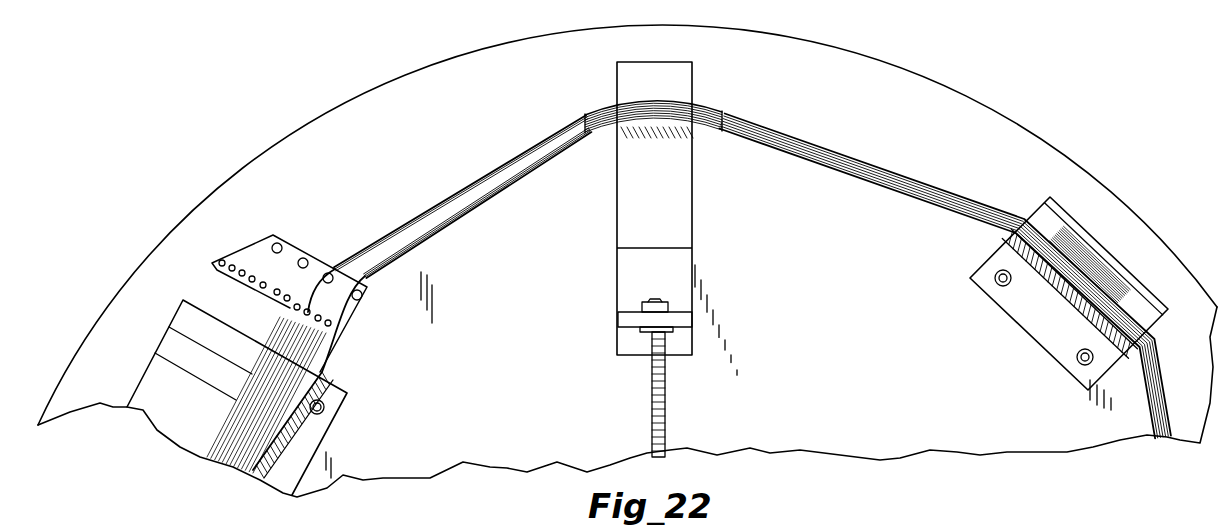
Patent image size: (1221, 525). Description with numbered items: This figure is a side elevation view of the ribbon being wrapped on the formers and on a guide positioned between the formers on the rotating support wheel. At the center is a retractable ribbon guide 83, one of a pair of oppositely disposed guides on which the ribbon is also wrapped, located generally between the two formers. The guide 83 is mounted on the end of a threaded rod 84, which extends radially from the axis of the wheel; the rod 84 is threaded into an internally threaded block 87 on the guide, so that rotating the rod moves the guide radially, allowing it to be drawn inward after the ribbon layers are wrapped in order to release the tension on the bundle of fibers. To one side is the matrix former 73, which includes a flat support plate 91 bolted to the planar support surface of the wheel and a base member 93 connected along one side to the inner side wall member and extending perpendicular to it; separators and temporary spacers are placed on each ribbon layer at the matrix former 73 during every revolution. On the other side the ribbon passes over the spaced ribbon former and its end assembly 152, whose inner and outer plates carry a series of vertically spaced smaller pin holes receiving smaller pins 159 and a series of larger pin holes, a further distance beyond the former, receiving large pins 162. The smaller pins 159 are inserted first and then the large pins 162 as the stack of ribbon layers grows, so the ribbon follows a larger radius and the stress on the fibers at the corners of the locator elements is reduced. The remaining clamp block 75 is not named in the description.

The matrix former 73 is at (1034, 208).
The cable clamp block 75 is at (134, 383).
The retractable ribbon guide 83 is at (683, 83).
The threaded rod 84 is at (650, 396).
The internally threaded block 87 is at (688, 317).
The flat support plate 91 is at (605, 112).
The base member 93 is at (1063, 292).
The end assembly 152 is at (240, 230).
The smaller pin 159 is at (309, 305).
The large pin 162 is at (330, 277).